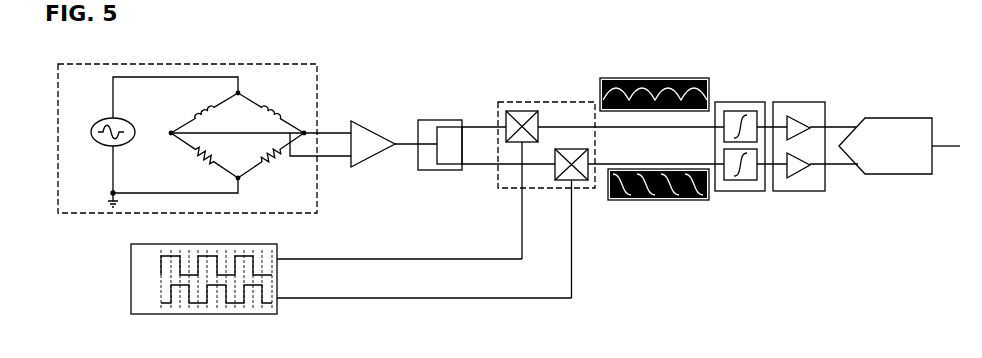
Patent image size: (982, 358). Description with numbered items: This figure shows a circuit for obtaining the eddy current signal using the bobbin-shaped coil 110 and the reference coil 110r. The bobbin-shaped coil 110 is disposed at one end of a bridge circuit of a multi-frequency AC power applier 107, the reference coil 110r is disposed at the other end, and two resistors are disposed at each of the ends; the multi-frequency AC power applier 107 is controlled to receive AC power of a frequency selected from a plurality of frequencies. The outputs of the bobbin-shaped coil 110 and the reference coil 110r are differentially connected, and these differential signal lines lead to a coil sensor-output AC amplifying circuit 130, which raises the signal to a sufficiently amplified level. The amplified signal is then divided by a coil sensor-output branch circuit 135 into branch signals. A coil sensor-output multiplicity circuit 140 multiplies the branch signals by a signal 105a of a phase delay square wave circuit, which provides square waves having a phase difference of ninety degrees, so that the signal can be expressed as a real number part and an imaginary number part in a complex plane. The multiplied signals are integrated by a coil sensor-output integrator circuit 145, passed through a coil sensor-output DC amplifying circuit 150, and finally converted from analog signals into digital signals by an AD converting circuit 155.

The signal of phase delay square wave circuit 105a is at (138, 314).
The multi-frequency AC power applier 107 is at (182, 151).
The bobbin-shaped coil 110 is at (277, 108).
The reference coil 110r is at (203, 108).
The coil sensor-output AC amplifying circuit 130 is at (368, 159).
The coil sensor-output branch circuit 135 is at (442, 170).
The coil sensor-output multiplicity circuit 140 is at (587, 188).
The coil sensor-output integrator circuit 145 is at (735, 191).
The coil sensor-output DC amplifying circuit 150 is at (801, 191).
The AD converting circuit 155 is at (898, 174).